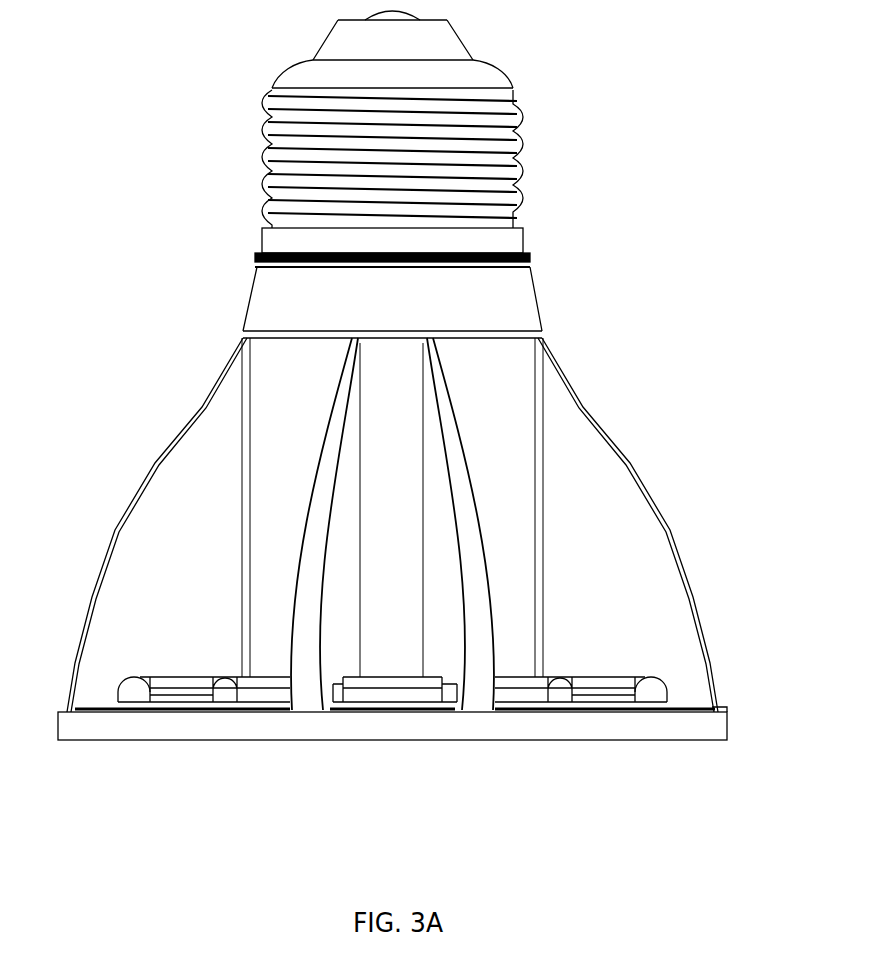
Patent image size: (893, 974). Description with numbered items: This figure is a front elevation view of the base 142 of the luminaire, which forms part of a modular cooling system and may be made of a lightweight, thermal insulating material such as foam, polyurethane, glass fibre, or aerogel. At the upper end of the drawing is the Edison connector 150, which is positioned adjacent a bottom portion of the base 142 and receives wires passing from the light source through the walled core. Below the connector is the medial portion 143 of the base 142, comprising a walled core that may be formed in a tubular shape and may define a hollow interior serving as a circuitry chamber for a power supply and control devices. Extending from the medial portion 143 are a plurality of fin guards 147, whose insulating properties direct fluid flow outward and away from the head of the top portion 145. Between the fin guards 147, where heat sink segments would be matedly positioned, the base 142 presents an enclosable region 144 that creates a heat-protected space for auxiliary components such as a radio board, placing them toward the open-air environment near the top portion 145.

The base 142 is at (186, 205).
The Edison connector 150 is at (513, 172).
The medial portion 143 is at (497, 360).
The fin guards 147 is at (315, 577).
The top portion 145 is at (615, 723).
The enclosable region 144 is at (203, 615).